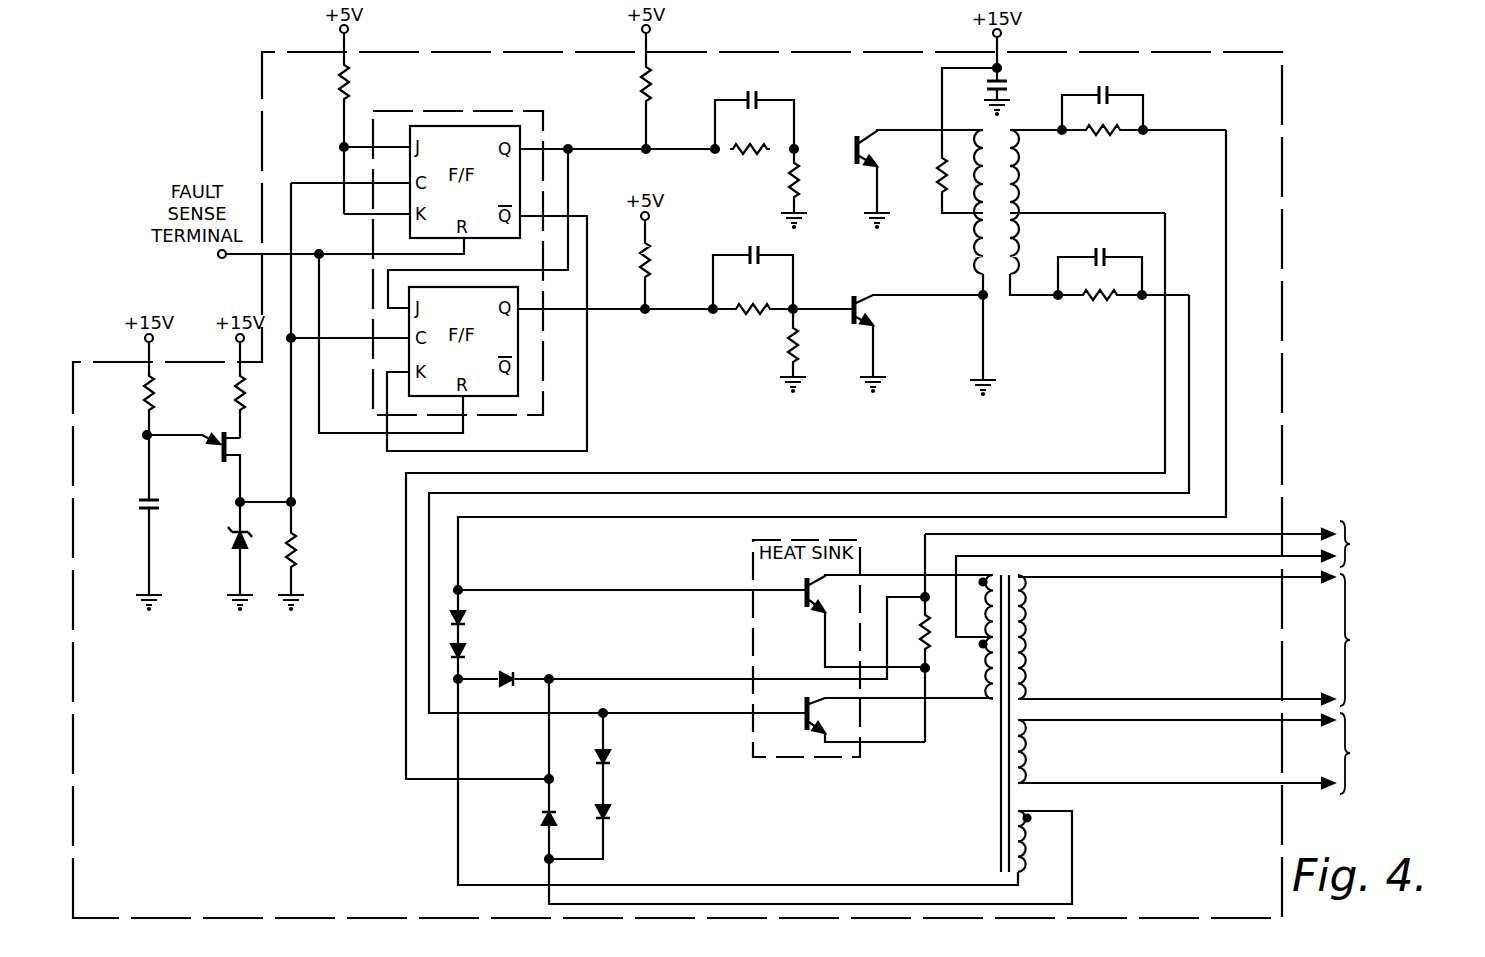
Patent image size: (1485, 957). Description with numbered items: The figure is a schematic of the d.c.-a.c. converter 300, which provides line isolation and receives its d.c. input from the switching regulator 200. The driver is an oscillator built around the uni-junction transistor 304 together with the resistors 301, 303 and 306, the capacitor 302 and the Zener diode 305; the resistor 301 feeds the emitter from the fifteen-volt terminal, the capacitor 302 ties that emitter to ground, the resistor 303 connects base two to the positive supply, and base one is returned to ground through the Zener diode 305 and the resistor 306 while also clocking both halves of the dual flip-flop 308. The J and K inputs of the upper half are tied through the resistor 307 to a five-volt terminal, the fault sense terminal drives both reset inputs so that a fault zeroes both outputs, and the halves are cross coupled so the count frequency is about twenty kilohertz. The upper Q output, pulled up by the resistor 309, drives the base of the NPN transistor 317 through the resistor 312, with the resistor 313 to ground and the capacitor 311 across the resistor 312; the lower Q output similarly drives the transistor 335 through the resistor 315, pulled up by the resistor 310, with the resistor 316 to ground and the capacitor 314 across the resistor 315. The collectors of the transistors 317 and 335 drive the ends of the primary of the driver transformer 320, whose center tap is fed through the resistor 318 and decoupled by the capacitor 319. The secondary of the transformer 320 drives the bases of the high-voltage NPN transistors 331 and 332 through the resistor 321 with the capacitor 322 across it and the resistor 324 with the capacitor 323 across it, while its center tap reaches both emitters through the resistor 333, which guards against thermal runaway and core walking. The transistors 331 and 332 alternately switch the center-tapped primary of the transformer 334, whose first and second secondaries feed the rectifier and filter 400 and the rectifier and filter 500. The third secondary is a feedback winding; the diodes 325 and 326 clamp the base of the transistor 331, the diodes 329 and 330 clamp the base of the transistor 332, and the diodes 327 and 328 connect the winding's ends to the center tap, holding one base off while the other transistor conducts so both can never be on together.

The switching regulator 200 is at (1393, 576).
The d.c.-a.c. converter 300 is at (1168, 889).
The rectifier and filter 400 is at (1393, 672).
The rectifier and filter 500 is at (1393, 789).
The resistor 301 is at (126, 421).
The capacitor 302 is at (123, 551).
The resistor 303 is at (217, 390).
The uni-junction transistor 304 is at (220, 454).
The Zener diode 305 is at (215, 556).
The resistor 306 is at (307, 556).
The resistor 307 is at (367, 82).
The dual flip-flop 308 is at (372, 372).
The resistor 309 is at (623, 91).
The resistor 310 is at (668, 264).
The capacitor 311 is at (754, 108).
The resistor 312 is at (750, 137).
The resistor 313 is at (779, 188).
The capacitor 314 is at (753, 267).
The resistor 315 is at (753, 297).
The resistor 316 is at (776, 350).
The NPN transistor 317 is at (856, 138).
The resistor 318 is at (940, 171).
The capacitor 319 is at (1015, 95).
The transformer 320 is at (1067, 262).
The resistor 321 is at (1144, 146).
The capacitor 322 is at (1102, 96).
The capacitor 323 is at (1100, 260).
The resistor 324 is at (1123, 308).
The diode 325 is at (478, 615).
The diode 326 is at (478, 658).
The diode 327 is at (691, 654).
The diode 328 is at (525, 816).
The diode 329 is at (625, 756).
The diode 330 is at (601, 829).
The NPN transistor 331 is at (803, 601).
The NPN transistor 332 is at (802, 718).
The resistor 333 is at (944, 638).
The transformer 334 is at (1129, 700).
The NPN transistor 335 is at (853, 297).